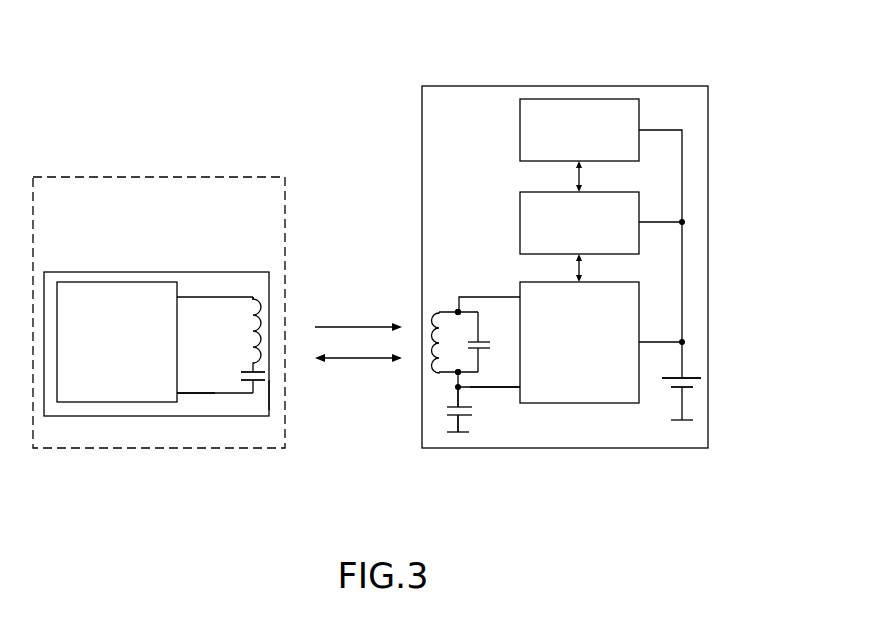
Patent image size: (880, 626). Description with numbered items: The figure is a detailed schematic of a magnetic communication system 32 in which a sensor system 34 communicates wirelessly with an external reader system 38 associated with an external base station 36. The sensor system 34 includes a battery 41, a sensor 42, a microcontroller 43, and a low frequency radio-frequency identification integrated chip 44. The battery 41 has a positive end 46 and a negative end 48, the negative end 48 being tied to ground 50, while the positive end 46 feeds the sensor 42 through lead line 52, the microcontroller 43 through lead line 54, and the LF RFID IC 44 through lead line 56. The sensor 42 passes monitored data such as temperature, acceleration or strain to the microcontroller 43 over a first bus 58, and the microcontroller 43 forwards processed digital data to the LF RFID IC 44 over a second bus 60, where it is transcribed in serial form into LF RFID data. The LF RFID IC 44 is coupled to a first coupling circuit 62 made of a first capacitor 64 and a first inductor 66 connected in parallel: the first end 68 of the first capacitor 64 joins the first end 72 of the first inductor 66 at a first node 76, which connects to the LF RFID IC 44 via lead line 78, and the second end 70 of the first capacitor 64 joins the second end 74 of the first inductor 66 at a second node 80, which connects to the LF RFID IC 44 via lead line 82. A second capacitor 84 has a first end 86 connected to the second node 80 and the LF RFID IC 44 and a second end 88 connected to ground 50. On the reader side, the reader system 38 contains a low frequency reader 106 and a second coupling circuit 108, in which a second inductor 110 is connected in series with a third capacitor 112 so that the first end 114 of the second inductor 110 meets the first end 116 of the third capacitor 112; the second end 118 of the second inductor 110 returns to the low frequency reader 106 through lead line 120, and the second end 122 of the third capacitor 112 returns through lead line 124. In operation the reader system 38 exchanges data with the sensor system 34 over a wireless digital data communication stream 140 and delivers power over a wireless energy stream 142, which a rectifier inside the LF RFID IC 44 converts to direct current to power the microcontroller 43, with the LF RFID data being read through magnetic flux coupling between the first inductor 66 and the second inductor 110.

The magnetic communication system 32 is at (344, 76).
The sensor system 34 is at (435, 119).
The external base station 36 is at (60, 214).
The external reader system 38 is at (155, 272).
The battery 41 is at (693, 377).
The sensor 42 is at (568, 141).
The microcontroller 43 is at (568, 236).
The low frequency radio-frequency identification integrated chip 44 is at (568, 351).
The positive end 46 is at (683, 366).
The negative end 48 is at (678, 397).
The ground 50 is at (678, 420).
The lead line 52 is at (657, 130).
The lead line 54 is at (661, 222).
The lead line 56 is at (660, 340).
The first bus 58 is at (582, 177).
The second bus 60 is at (582, 267).
The first coupling circuit 62 is at (447, 242).
The first capacitor 64 is at (485, 342).
The first inductor 66 is at (436, 348).
The first end 68 is at (480, 311).
The second end 70 is at (480, 358).
The first end 72 is at (456, 310).
The second end 74 is at (456, 376).
The first node 76 is at (457, 310).
The lead line 78 is at (493, 296).
The second node 80 is at (456, 384).
The lead line 82 is at (490, 388).
The second capacitor 84 is at (453, 405).
The first end 86 is at (470, 400).
The second end 88 is at (450, 428).
The low frequency reader 106 is at (102, 352).
The second coupling circuit 108 is at (248, 276).
The second inductor 110 is at (261, 318).
The third capacitor 112 is at (268, 395).
The first end 114 is at (250, 362).
The first end 116 is at (227, 366).
The second end 118 is at (257, 296).
The lead line 120 is at (212, 297).
The second end 122 is at (250, 390).
The lead line 124 is at (193, 395).
The wireless digital data communication stream 140 is at (362, 360).
The wireless energy stream 142 is at (362, 325).